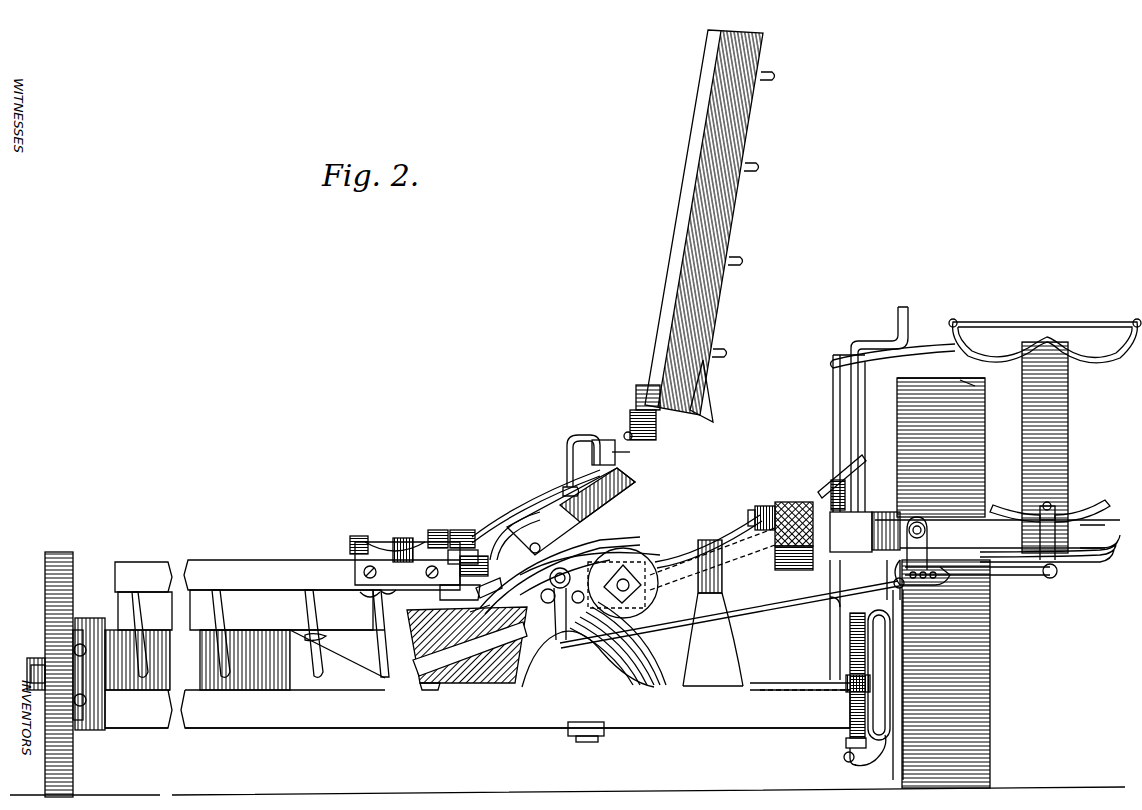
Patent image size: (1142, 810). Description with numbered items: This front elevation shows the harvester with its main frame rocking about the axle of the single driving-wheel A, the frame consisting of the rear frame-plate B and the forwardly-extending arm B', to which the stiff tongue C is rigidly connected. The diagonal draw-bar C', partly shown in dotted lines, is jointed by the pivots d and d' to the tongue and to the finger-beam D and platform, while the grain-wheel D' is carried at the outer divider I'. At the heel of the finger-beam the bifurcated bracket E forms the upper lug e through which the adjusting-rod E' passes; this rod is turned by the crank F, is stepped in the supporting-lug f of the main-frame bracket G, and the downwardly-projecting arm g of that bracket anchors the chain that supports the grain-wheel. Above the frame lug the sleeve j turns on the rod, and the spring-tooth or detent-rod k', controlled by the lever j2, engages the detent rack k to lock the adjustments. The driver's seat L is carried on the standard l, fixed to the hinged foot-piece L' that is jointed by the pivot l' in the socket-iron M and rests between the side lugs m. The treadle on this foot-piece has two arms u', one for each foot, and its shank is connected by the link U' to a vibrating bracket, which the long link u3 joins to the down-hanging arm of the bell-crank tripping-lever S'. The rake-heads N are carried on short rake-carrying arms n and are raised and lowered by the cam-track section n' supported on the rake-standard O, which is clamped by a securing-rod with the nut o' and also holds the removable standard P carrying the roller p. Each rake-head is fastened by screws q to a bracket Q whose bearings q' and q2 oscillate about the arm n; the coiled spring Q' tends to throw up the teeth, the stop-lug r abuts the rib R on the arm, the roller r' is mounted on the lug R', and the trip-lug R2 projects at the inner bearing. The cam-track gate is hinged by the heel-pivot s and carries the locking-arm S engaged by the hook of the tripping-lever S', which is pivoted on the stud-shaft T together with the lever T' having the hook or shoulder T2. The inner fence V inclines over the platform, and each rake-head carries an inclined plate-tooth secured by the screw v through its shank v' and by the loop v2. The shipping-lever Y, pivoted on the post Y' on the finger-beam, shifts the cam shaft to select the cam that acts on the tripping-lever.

The rocking rake-head N is at (440, 360).
The finger-beam D is at (477, 709).
The grain-wheel D' is at (47, 674).
The outer divider I' is at (97, 674).
The pivot d' is at (436, 699).
The nut o' is at (591, 739).
The bracket Q is at (407, 564).
The spring Q' is at (398, 537).
The lug-bearing q2 is at (359, 533).
The lug-bearing q' is at (435, 530).
The screws q is at (405, 576).
The cam-track traveling roller r' is at (457, 555).
The stop-lug r is at (474, 568).
The lug R' is at (460, 597).
The shoulder or rib R is at (525, 509).
The trip-lug R2 is at (533, 475).
The bracket-standard P is at (574, 463).
The roller p is at (625, 420).
The rake-carrying arm n is at (594, 472).
The cam-track section n' is at (562, 514).
The stud-shaft T is at (560, 589).
The lever T' is at (590, 568).
The hook or shoulder T2 is at (640, 558).
The rake-standard O is at (594, 644).
The tripping-lever S' is at (560, 575).
The locking-arm S is at (489, 586).
The heel-pivot s is at (480, 609).
The draw-bar C' is at (467, 645).
The inner fence or grain-guard V is at (389, 633).
The screw v is at (388, 601).
The shank v' is at (370, 603).
The loop v2 is at (327, 638).
The shipping-lever Y is at (708, 541).
The post or bracket Y' is at (713, 613).
The pivot d is at (761, 510).
The tongue C is at (794, 536).
The lever or crank F is at (879, 334).
The lever j2 is at (930, 350).
The sleeve j is at (849, 433).
The driver's seat L is at (1045, 341).
The seat standard l is at (1045, 447).
The driving-wheel A is at (941, 447).
The detent rack k is at (941, 375).
The spring-tooth or detent-rod k' is at (837, 482).
The socket-iron M is at (870, 536).
The side lugs m is at (888, 531).
The foot-piece L' is at (997, 533).
The treadle-arms u' is at (1050, 526).
The pivot l' is at (995, 567).
The link U' is at (976, 578).
The forwardly-extending arm B' is at (732, 610).
The long link u3 is at (823, 605).
The frame-plate B is at (941, 674).
The bifurcated bracket E is at (800, 625).
The adjusting-rod E' is at (866, 675).
The main-frame bracket G is at (882, 678).
The upper lug e is at (858, 684).
The supporting-lug f is at (846, 742).
The arm g is at (872, 762).